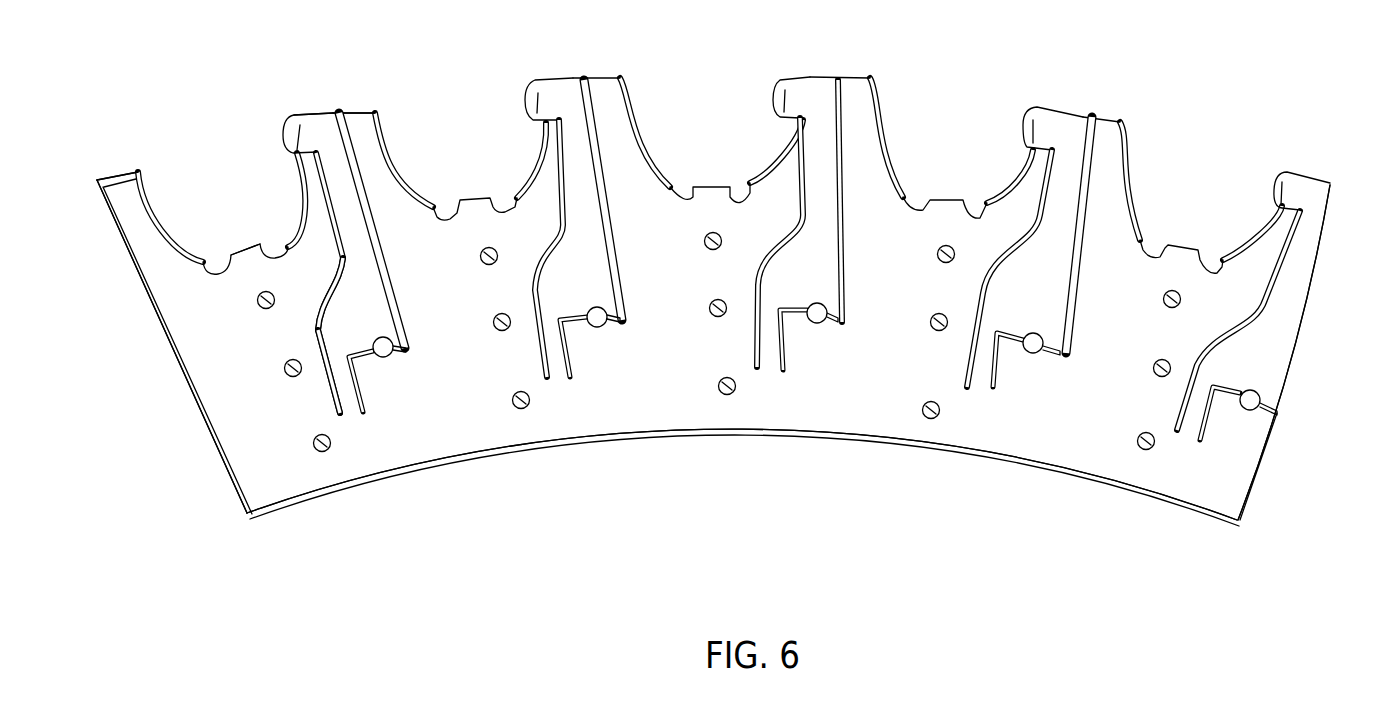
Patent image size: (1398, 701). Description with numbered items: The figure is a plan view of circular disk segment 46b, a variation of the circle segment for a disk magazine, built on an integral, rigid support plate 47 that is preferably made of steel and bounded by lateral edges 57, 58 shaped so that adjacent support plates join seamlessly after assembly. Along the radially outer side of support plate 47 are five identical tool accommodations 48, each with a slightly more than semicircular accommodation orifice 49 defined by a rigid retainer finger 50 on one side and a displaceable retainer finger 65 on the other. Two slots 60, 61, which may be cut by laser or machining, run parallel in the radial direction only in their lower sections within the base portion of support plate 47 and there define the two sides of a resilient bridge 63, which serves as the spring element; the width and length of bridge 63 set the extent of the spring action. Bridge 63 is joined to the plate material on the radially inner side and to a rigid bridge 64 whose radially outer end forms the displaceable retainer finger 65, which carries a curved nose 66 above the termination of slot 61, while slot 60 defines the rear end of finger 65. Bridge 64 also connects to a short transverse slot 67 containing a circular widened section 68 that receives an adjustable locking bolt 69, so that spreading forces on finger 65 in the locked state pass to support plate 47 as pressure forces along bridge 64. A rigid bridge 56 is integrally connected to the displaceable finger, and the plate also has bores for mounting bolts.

The circular disk segment 46b is at (195, 459).
The support plate 47 is at (613, 420).
The tool accommodation 48 is at (189, 140).
The accommodation orifice 49 is at (237, 207).
The rigid retainer finger 50 is at (130, 212).
The rigid bridge 56 is at (727, 396).
The lateral edge 57 is at (178, 345).
The lateral edge 58 is at (1308, 298).
The slot 60 is at (395, 262).
The slot 61 is at (318, 340).
The resilient bridge 63 is at (338, 395).
The rigid bridge 64 is at (358, 274).
The displaceable retainer finger 65 is at (310, 112).
The curved nose 66 is at (283, 122).
The transverse slot 67 is at (362, 365).
The circular widened section 68 is at (393, 353).
The adjustable locking bolt 69 is at (408, 333).